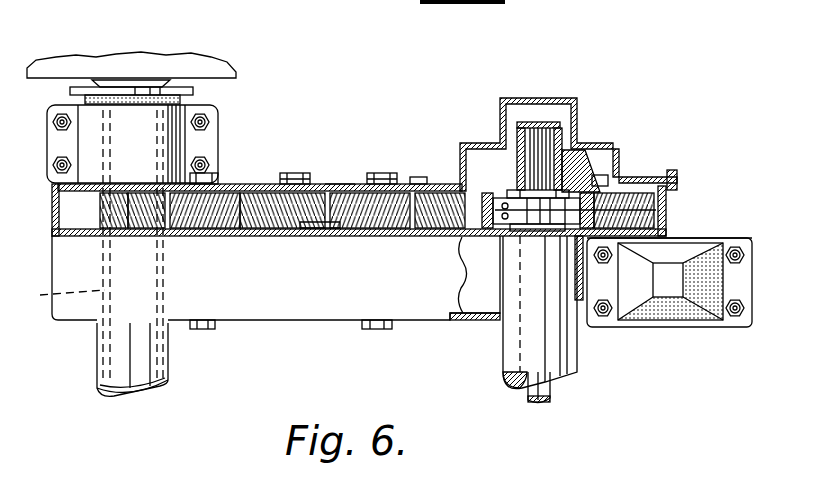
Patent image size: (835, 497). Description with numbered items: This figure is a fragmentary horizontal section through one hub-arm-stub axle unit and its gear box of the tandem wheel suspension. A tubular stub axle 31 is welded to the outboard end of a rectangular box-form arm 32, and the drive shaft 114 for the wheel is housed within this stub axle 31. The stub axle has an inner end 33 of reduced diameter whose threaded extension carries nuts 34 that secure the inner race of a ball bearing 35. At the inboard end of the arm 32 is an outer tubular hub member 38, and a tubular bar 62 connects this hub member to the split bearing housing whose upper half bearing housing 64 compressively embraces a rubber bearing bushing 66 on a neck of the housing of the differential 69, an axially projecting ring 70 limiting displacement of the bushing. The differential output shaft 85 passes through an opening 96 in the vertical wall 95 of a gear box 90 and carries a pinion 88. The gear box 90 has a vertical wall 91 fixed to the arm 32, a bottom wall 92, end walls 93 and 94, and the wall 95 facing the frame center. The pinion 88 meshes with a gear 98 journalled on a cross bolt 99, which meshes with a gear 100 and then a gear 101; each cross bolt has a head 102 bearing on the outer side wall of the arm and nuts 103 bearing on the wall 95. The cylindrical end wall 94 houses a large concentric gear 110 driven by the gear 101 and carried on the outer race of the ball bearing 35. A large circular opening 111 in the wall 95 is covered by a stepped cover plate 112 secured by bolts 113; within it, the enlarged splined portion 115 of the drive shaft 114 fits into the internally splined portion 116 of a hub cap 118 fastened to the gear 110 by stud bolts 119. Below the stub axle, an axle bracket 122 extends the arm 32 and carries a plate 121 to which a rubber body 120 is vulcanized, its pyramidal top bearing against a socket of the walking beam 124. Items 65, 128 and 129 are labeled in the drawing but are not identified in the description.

The ring 70 is at (127, 80).
The differential 69 is at (214, 48).
The rubber bearing bushing 66 is at (183, 100).
The upper half bearing housing 64 is at (90, 140).
The bolts 65 is at (52, 122).
The opening 96 is at (108, 190).
The bottom wall 92 is at (72, 207).
The end wall 93 is at (53, 232).
The pinion 88 is at (113, 212).
The differential output shaft 85 is at (128, 193).
The gear 98 is at (228, 193).
The cross bolt 99 is at (297, 173).
The vertical wall 95 is at (338, 184).
The nuts 103 is at (382, 173).
The large circular opening 111 is at (428, 177).
The gear 100 is at (302, 224).
The vertical wall 91 is at (328, 228).
The gear box 90 is at (253, 243).
The gear 101 is at (410, 224).
The large concentric gear 110 is at (440, 228).
The arm 32 is at (332, 322).
The inner end 33 is at (523, 262).
The tubular bar 62 is at (58, 294).
The head 102 is at (203, 328).
The outer tubular hub member 38 is at (120, 367).
The cover plate 112 is at (470, 143).
The enlarged splined portion 115 is at (492, 143).
The internally splined portion 116 is at (563, 133).
The nuts 34 is at (593, 173).
The hub cap 118 is at (587, 143).
The stud bolts 119 is at (623, 167).
The bolts 113 is at (673, 170).
The end wall 94 is at (640, 219).
The ball bearing 35 is at (650, 211).
The tubular stub axle 31 is at (565, 358).
The drive shaft 114 is at (541, 392).
The plate 121 is at (742, 290).
The rubber body 120 is at (707, 277).
The axle bracket 122 is at (748, 236).
The walking beam 124 is at (446, 2).
The element 129 is at (520, 2).
The element 128 is at (600, 1).